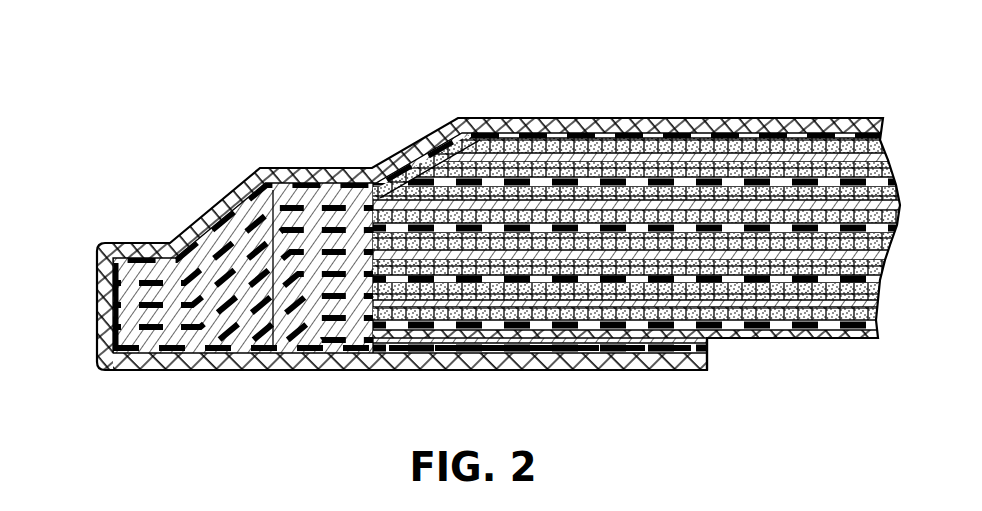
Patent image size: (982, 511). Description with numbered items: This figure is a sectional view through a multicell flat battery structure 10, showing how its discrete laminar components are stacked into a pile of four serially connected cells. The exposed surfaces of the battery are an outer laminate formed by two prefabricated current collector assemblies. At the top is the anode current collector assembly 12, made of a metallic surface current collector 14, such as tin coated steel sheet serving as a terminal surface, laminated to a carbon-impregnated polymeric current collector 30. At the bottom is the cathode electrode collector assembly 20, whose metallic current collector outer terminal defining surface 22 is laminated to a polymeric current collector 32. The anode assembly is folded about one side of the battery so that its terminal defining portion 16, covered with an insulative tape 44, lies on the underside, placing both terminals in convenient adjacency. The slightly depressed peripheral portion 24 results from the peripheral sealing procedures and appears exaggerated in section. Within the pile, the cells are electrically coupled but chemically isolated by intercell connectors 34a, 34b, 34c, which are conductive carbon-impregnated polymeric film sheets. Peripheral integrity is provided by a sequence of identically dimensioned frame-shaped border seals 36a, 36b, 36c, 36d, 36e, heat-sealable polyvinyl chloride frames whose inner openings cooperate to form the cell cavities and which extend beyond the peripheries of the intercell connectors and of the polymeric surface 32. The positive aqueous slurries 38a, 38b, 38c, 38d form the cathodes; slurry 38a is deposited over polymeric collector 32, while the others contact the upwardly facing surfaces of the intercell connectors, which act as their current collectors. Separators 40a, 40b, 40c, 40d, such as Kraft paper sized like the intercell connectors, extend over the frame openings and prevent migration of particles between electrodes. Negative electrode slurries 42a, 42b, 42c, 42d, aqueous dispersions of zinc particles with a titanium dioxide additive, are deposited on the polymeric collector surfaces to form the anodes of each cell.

The battery structure 10 is at (787, 81).
The anode current collector assembly 12 is at (888, 123).
The metallic surface current collector 14 is at (862, 118).
The terminal defining portion 16 is at (392, 381).
The cathode electrode collector assembly 20 is at (882, 321).
The metallic current collector outer terminal defining surface 22 is at (852, 338).
The depressed peripheral portion 24 is at (294, 154).
The polymeric current collector 30 is at (883, 146).
The polymeric current collector 32 is at (878, 313).
The intercell connector 34a is at (886, 271).
The intercell connector 34b is at (895, 232).
The intercell connector 34c is at (883, 186).
The frame-shaped border seal 36a is at (100, 359).
The frame-shaped border seal 36b is at (113, 336).
The frame-shaped border seal 36c is at (125, 304).
The frame-shaped border seal 36d is at (120, 281).
The frame-shaped border seal 36e is at (112, 261).
The positive aqueous slurry 38a is at (601, 315).
The positive aqueous slurry 38b is at (713, 267).
The positive aqueous slurry 38c is at (640, 210).
The positive aqueous slurry 38d is at (540, 165).
The separator 40a is at (877, 296).
The separator 40b is at (880, 249).
The separator 40c is at (896, 207).
The separator 40d is at (880, 170).
The negative electrode slurry 42a is at (653, 290).
The negative electrode slurry 42b is at (803, 238).
The negative electrode slurry 42c is at (672, 195).
The negative electrode slurry 42d is at (565, 140).
The insulative tape 44 is at (714, 377).